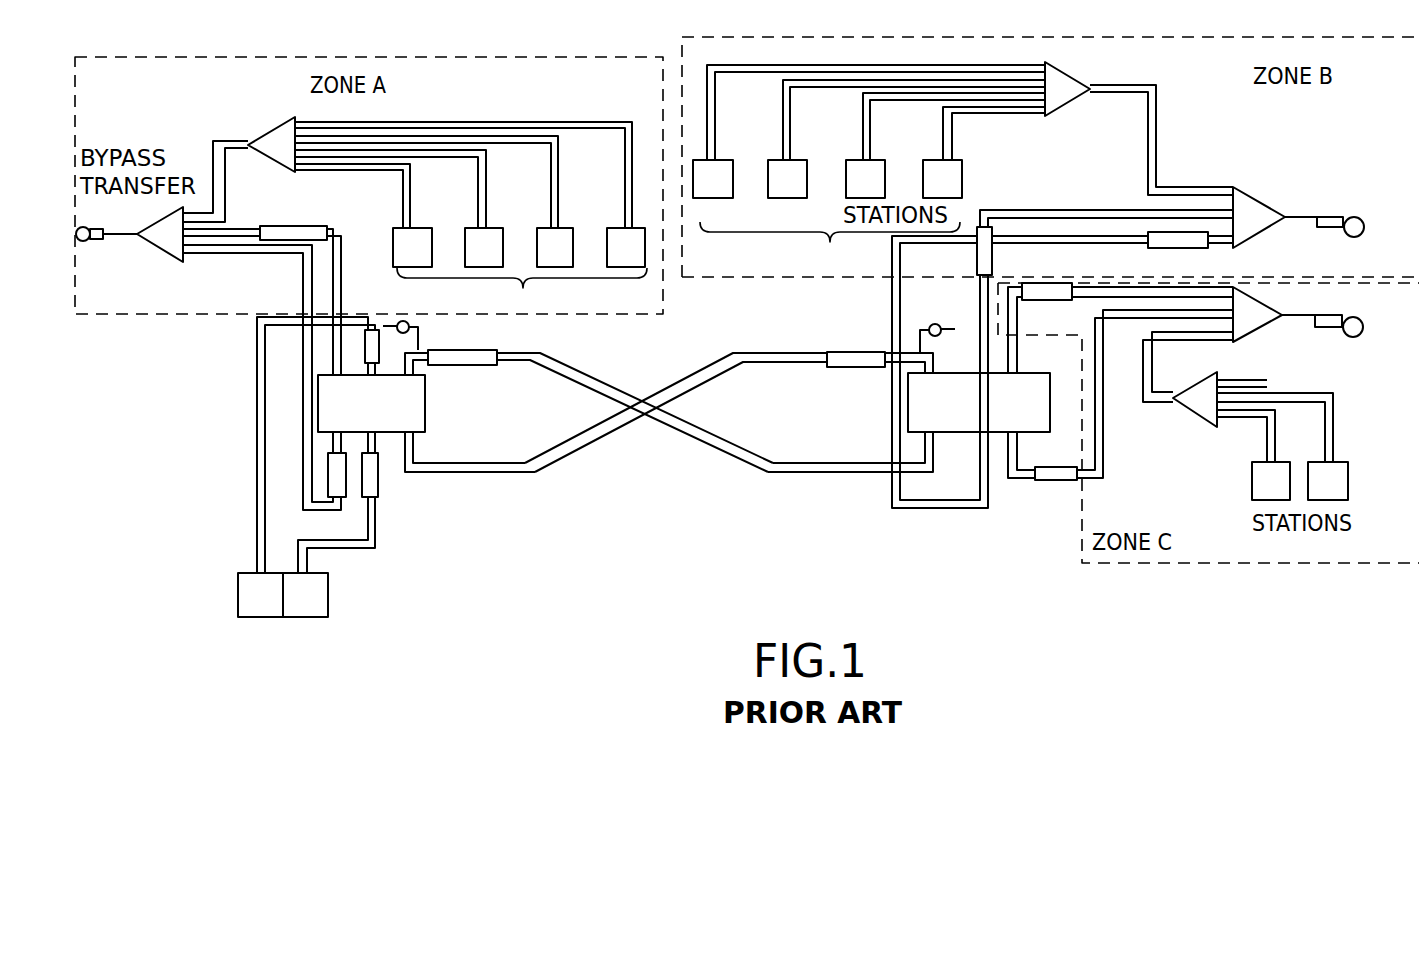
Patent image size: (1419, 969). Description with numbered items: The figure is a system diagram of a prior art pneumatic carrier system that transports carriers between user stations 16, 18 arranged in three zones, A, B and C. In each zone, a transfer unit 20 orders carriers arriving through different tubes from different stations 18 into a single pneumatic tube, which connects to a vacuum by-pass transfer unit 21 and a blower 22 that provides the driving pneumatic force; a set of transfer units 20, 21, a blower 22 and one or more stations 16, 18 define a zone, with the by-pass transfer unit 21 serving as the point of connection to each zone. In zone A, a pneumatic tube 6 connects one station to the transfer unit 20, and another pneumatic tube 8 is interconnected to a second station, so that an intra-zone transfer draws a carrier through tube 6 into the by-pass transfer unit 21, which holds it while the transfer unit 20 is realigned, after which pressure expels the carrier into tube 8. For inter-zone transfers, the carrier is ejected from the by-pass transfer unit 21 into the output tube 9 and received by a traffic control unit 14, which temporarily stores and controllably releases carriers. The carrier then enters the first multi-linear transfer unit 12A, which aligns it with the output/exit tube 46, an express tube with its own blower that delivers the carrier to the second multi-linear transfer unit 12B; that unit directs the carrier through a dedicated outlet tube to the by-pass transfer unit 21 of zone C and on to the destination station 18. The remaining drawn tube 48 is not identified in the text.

The pneumatic tube 6 is at (575, 121).
The pneumatic tube 8 is at (357, 172).
The output tube 9 is at (237, 233).
The first multi-linear transfer unit 12A is at (359, 377).
The second multi-linear transfer unit 12B is at (1000, 382).
The traffic control unit 14 is at (295, 226).
The user station 16 is at (328, 592).
The user station 18 is at (1370, 482).
The transfer unit 20 is at (268, 133).
The vacuum by-pass transfer unit 21 is at (170, 258).
The blower 22 is at (88, 245).
The output/exit tube 46 is at (478, 474).
The crossover line 48 is at (580, 372).